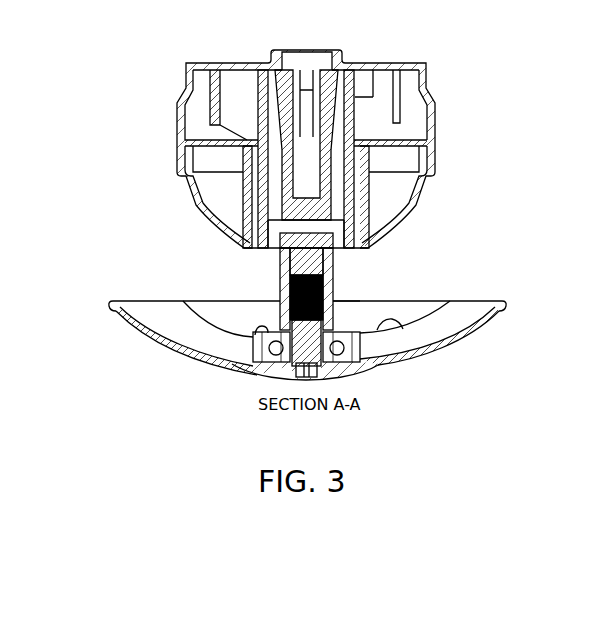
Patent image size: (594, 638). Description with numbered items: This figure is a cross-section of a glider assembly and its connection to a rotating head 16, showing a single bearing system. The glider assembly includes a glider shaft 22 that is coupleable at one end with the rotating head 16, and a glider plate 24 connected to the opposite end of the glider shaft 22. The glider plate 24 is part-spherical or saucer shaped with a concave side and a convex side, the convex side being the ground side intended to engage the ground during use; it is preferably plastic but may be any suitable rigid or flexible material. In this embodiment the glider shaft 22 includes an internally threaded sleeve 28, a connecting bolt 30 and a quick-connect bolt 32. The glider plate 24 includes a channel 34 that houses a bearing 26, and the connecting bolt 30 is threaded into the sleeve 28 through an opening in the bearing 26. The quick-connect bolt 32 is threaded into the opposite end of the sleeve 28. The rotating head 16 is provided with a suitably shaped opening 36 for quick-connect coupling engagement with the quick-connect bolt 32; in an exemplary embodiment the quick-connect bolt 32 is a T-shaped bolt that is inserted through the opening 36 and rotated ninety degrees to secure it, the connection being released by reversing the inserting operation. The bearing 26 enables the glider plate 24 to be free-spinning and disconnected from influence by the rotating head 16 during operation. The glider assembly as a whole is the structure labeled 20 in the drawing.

The rotating head 16 is at (442, 67).
The deflector dish 20 is at (458, 287).
The glider shaft 22 is at (352, 273).
The glider plate 24 is at (478, 332).
The bearing 26 is at (350, 355).
The internally threaded sleeve 28 is at (280, 285).
The connecting bolt 30 is at (287, 367).
The quick-connect bolt 32 is at (315, 232).
The channel 34 is at (348, 330).
The opening 36 is at (285, 231).